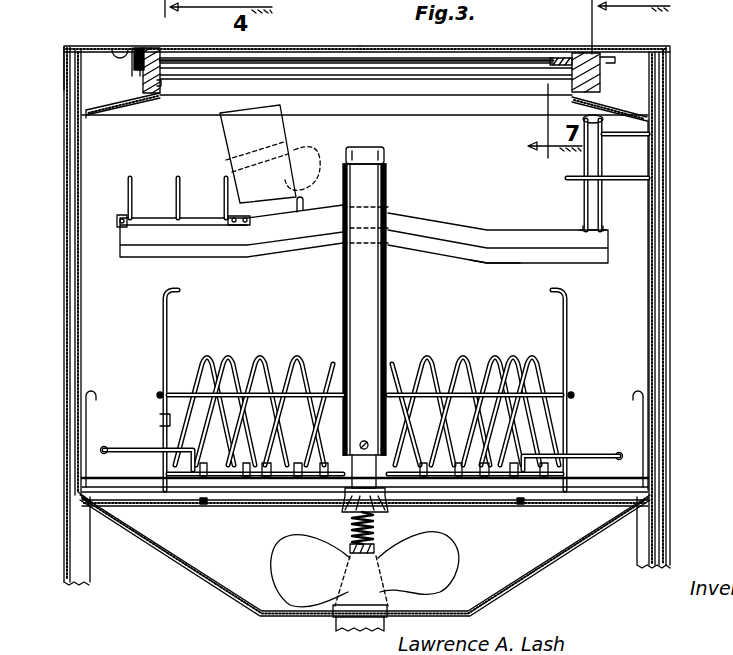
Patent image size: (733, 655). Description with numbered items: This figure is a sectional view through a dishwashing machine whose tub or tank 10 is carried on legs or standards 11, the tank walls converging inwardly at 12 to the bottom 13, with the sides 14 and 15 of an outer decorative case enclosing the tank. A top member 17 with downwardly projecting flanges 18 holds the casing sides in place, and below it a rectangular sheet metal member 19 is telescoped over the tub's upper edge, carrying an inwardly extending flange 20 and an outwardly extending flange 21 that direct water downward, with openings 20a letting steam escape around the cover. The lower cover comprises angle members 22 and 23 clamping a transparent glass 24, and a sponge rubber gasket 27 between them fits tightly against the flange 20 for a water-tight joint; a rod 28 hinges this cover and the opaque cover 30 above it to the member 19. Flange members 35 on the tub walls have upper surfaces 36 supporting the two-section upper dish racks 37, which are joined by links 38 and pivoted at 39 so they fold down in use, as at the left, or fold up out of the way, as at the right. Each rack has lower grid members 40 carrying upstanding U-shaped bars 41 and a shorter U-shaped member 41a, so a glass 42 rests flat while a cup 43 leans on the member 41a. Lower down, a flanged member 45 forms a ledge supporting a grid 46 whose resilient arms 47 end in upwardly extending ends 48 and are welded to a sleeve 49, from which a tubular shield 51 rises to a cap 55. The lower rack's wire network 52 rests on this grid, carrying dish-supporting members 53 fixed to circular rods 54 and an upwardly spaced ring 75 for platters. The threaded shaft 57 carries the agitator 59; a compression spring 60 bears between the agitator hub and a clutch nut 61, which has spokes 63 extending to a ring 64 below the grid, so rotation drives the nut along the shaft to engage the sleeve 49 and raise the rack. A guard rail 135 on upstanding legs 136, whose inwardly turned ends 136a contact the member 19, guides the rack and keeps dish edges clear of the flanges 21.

The tub or tank 10 is at (648, 302).
The legs or standards 11 is at (645, 538).
The inwardly converging wall portion 12 is at (580, 546).
The bottom 13 is at (310, 612).
The side of outer case 14 is at (669, 190).
The side of outer case 15 is at (64, 212).
The top member 17 is at (108, 46).
The downwardly projecting flanges 18 is at (64, 64).
The sheet metal member 19 is at (124, 50).
The inwardly extending flange 20 is at (143, 78).
The openings 20a is at (603, 88).
The outwardly extending flange 21 is at (130, 108).
The flanged or angle member 22 is at (318, 70).
The flanged or angle member 23 is at (160, 46).
The glass or transparent material 24 is at (366, 66).
The gasket 27 is at (584, 56).
The rod 28 is at (612, 56).
The opaque cover 30 is at (510, 50).
The flange members 35 is at (487, 263).
The upper surfaces 36 is at (468, 228).
The upper dish racks 37 is at (158, 208).
The links 38 is at (240, 226).
The pivot 39 is at (117, 222).
The lower grid members 40 is at (198, 226).
The U-shaped bars or rods 41 is at (181, 184).
The U-shaped member 41a is at (300, 214).
The glass 42 is at (222, 134).
The cup 43 is at (296, 162).
The flanged member 45 is at (80, 506).
The supporting grid 46 is at (141, 509).
The arms 47 is at (184, 486).
The upwardly extending ends 48 is at (88, 437).
The sleeve 49 is at (360, 463).
The tubular shield 51 is at (380, 320).
The grid or wire network 52 is at (578, 483).
The dish-supporting members 53 is at (534, 376).
The circular rods 54 is at (262, 480).
The cap 55 is at (361, 150).
The shaft or shaft extension 57 is at (375, 548).
The agitator 59 is at (440, 562).
The compression spring 60 is at (352, 530).
The clutch nut 61 is at (382, 510).
The spokes 63 is at (485, 500).
The ring 64 is at (520, 505).
The upwardly spaced ring 75 is at (612, 454).
The guard rail 135 is at (178, 394).
The upstanding legs 136 is at (164, 420).
The inwardly turned ends 136a is at (166, 292).